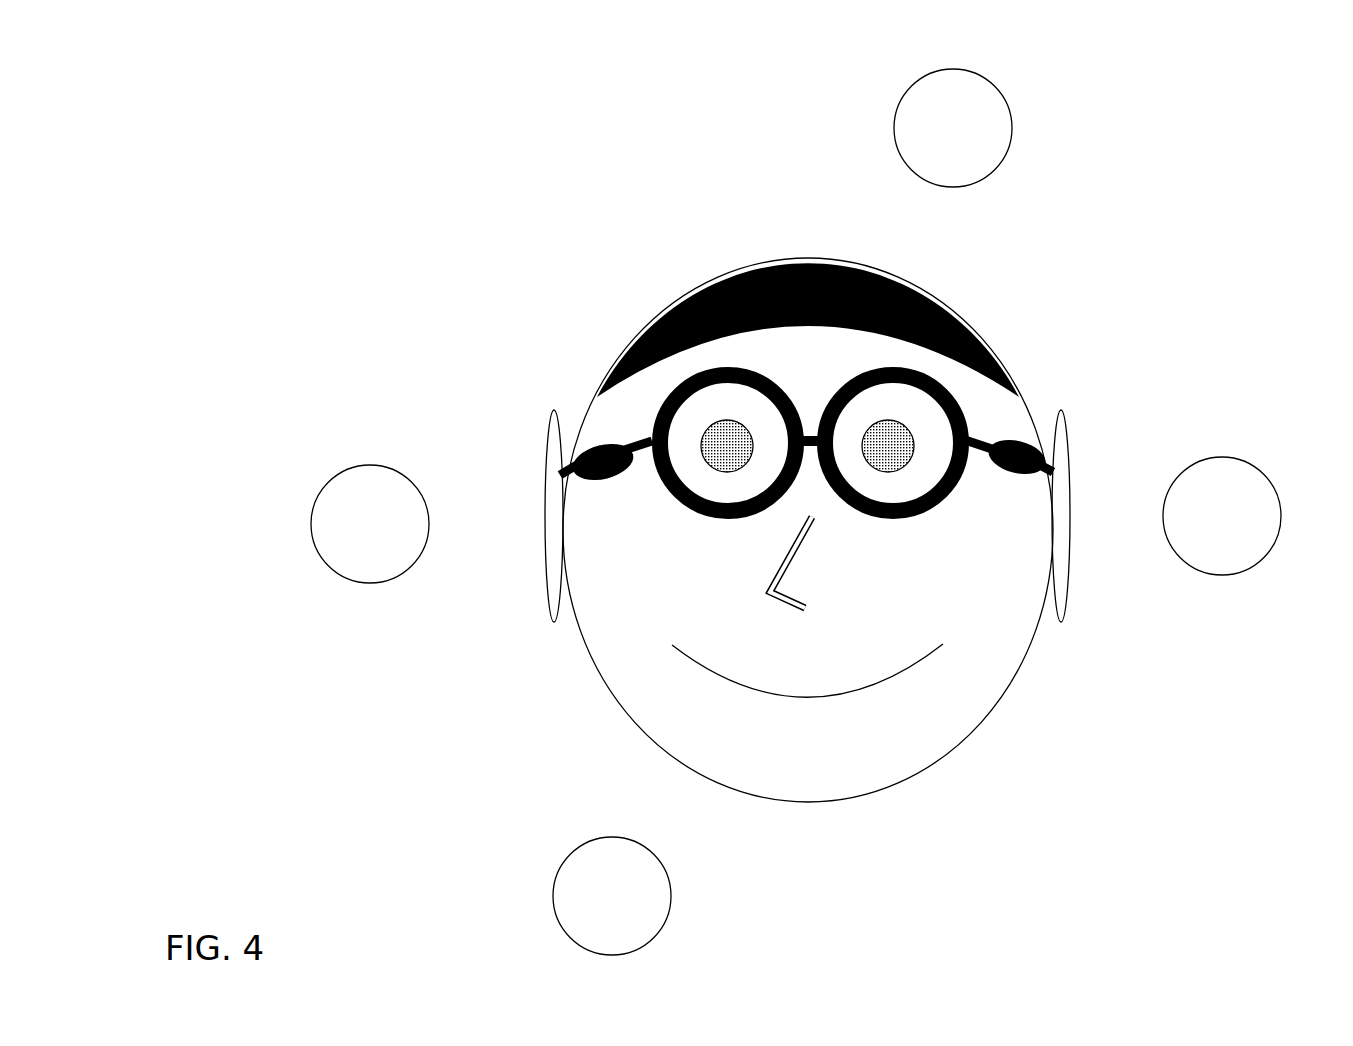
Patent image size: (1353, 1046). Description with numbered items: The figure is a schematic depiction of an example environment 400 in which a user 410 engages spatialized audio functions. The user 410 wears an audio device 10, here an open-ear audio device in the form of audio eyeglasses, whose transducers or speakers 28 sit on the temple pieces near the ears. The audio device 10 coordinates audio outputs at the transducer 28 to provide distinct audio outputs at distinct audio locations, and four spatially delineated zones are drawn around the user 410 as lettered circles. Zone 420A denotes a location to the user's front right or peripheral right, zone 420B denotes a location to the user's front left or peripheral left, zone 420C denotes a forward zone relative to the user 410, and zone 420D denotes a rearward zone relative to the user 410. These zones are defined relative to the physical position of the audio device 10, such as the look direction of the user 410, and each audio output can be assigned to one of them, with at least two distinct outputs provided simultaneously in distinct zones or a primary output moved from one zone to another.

The environment 400 is at (250, 105).
The user 410 is at (497, 440).
The audio device 10 is at (977, 420).
The transducer 28 is at (606, 487).
The zone 420A is at (262, 488).
The zone 420B is at (1232, 443).
The zone 420C is at (527, 890).
The zone 420D is at (862, 110).